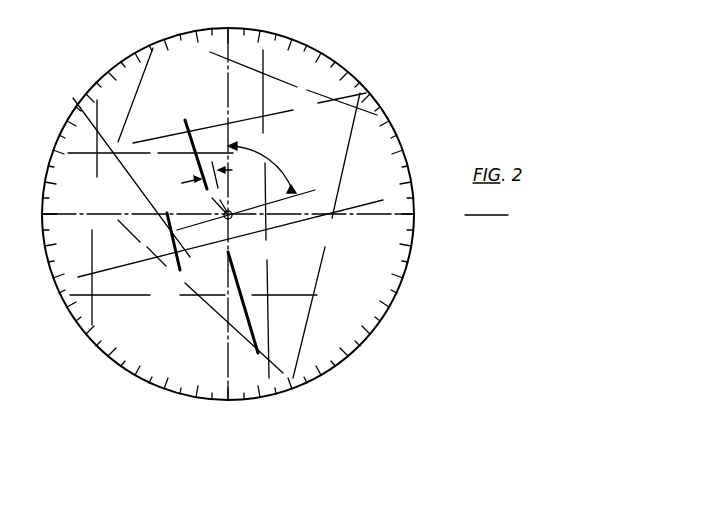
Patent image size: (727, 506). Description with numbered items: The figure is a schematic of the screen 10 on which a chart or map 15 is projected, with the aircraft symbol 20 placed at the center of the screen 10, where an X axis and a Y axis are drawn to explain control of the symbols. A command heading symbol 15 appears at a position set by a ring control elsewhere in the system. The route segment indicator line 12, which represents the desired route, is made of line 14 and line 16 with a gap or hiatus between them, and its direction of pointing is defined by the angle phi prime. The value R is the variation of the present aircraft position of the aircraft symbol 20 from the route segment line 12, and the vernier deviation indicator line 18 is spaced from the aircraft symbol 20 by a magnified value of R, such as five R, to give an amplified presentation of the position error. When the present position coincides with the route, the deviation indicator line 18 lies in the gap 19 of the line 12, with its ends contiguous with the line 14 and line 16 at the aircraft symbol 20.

The screen 10 is at (385, 128).
The route segment indicator line 12 is at (234, 268).
The line 14 is at (243, 312).
The command heading symbol 15 is at (95, 88).
The line 16 is at (195, 166).
The vernier deviation indicator line 18 is at (170, 266).
The gap 19 is at (227, 219).
The aircraft symbol 20 is at (233, 211).